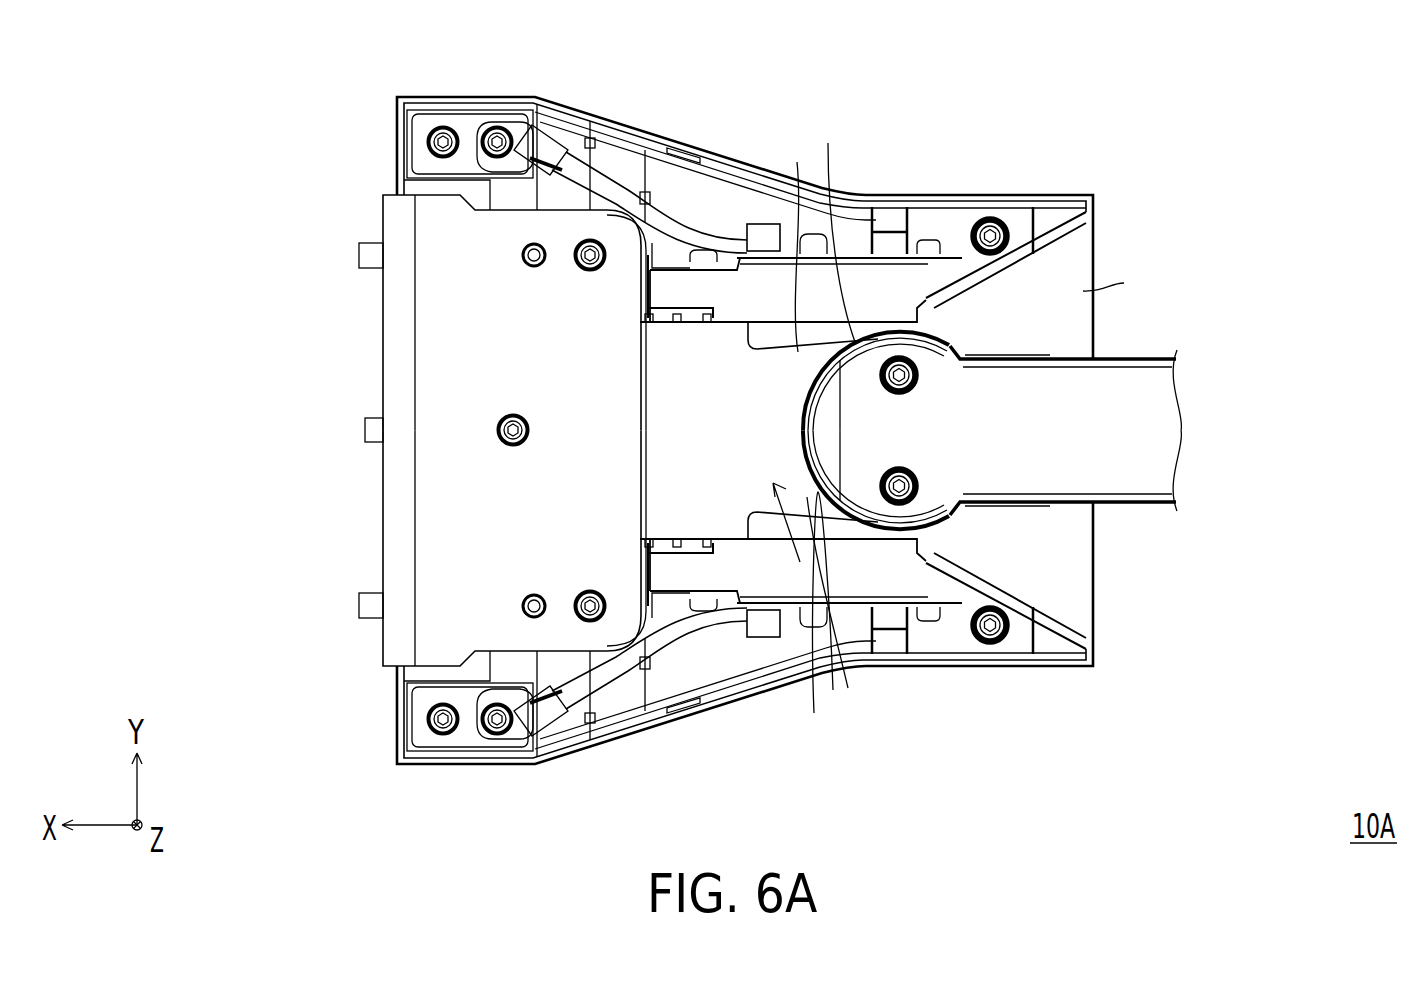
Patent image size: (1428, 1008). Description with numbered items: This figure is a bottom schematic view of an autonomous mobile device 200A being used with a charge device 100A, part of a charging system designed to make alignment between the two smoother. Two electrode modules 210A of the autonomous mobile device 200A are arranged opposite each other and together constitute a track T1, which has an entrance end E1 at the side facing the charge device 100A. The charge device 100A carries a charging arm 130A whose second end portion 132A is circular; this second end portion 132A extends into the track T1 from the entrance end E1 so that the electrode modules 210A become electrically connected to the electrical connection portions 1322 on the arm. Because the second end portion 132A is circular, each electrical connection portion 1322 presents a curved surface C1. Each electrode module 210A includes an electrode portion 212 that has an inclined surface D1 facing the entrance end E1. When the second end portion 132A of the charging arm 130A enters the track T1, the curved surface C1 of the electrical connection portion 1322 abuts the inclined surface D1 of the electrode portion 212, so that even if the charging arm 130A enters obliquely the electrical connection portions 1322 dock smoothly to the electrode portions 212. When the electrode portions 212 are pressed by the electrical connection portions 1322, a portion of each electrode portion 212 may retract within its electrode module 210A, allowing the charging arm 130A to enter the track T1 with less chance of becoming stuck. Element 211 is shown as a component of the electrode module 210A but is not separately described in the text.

The autonomous mobile device 200A is at (1143, 56).
The charging arm 130A is at (1134, 473).
The charge device 100A is at (1226, 454).
The electrode module 210A is at (1062, 134).
The clamp bracket 211 is at (937, 372).
The electrode portion 212 is at (876, 334).
The electrical connection portion 1322 is at (862, 330).
The second end portion 132A is at (990, 645).
The curved surface C1 is at (836, 224).
The inclined surface D1 is at (818, 425).
The track T1 is at (817, 621).
The entrance end E1 is at (1116, 282).